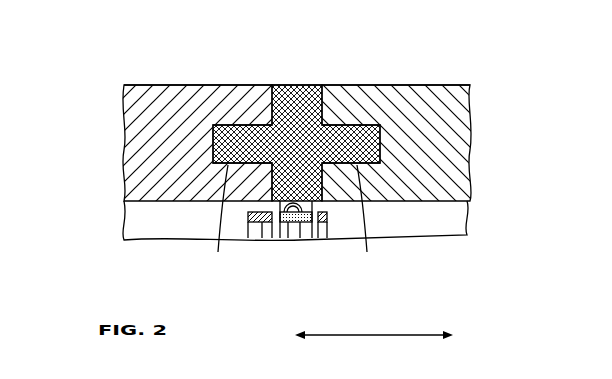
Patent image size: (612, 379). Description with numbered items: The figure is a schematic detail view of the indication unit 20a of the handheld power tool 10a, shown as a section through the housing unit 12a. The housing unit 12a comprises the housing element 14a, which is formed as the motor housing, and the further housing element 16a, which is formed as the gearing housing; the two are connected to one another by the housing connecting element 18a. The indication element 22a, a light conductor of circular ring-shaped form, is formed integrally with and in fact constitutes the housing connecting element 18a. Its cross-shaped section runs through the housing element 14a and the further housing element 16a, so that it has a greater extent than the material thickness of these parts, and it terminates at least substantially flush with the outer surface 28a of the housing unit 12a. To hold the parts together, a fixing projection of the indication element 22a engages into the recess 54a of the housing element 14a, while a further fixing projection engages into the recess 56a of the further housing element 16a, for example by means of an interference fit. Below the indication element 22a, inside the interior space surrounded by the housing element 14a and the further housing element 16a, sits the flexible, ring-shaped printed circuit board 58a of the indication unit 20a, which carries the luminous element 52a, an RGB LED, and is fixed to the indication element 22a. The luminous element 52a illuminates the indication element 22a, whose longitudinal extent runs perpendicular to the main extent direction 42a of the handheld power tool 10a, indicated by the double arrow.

The handheld power tool 10a is at (108, 66).
The housing unit 12a is at (506, 78).
The housing element 14a is at (392, 85).
The further housing element 16a is at (176, 85).
The housing connecting element 18a is at (292, 85).
The indication element 22a is at (296, 143).
The outer surface 28a is at (452, 85).
The indication unit 20a is at (329, 254).
The luminous element 52a is at (295, 238).
The recess 54a is at (369, 218).
The recess 56a is at (218, 218).
The printed circuit board 58a is at (262, 238).
The main extent direction 42a is at (409, 333).